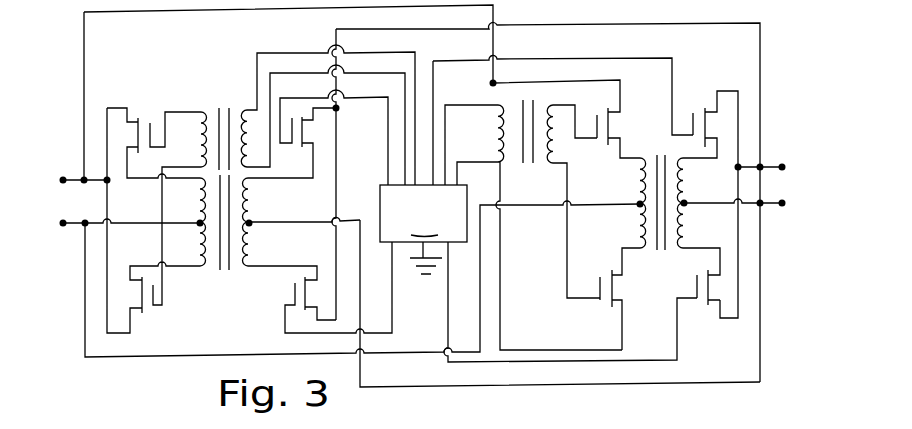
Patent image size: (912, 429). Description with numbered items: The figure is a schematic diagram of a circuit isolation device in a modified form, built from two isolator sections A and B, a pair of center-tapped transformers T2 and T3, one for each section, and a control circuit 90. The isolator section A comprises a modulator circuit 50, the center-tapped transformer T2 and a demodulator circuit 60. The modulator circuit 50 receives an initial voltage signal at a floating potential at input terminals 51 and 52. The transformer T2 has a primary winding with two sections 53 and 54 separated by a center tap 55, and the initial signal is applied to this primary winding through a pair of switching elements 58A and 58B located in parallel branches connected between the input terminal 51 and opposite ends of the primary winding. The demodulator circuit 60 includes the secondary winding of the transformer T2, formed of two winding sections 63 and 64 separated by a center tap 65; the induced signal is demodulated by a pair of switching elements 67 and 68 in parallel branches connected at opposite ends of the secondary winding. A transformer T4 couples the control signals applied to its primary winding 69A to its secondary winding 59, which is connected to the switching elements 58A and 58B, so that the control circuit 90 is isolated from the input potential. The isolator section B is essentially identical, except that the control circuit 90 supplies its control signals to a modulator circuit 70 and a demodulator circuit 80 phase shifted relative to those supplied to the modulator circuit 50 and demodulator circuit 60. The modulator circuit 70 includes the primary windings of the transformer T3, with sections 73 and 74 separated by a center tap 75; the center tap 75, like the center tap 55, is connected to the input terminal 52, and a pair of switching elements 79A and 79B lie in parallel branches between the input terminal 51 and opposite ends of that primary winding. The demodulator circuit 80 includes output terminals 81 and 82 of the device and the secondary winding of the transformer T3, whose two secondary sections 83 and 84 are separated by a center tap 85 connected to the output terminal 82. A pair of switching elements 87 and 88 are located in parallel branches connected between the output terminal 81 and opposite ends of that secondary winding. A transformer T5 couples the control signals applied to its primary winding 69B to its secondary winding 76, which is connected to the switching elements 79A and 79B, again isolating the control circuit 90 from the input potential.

The modulator circuit 50 is at (181, 56).
The input terminal 51 is at (63, 178).
The input terminal 52 is at (63, 226).
The primary winding section 53 is at (200, 198).
The primary winding section 54 is at (200, 243).
The center tap 55 is at (200, 222).
The switching element 58A is at (147, 86).
The switching element 58B is at (151, 315).
The secondary winding 59 is at (203, 134).
The demodulator circuit 60 is at (318, 192).
The secondary winding section 63 is at (249, 192).
The secondary winding section 64 is at (249, 243).
The center tap 65 is at (289, 226).
The switching element 67 is at (320, 129).
The switching element 68 is at (320, 293).
The primary winding 69A is at (250, 137).
The primary winding 69B is at (507, 135).
The modulator circuit 70 is at (581, 389).
The primary winding section 73 is at (641, 188).
The primary winding section 74 is at (641, 225).
The center tap 75 is at (612, 203).
The secondary winding 76 is at (550, 133).
The switching element 79A is at (619, 127).
The switching element 79B is at (605, 307).
The demodulator circuit 80 is at (747, 38).
The output terminal 81 is at (782, 166).
The output terminal 82 is at (784, 201).
The secondary winding section 83 is at (683, 174).
The secondary winding section 84 is at (687, 223).
The center tap 85 is at (686, 204).
The switching element 87 is at (720, 125).
The switching element 88 is at (724, 285).
The control circuit 90 is at (538, 208).
The center-tapped transformer T2 is at (229, 273).
The center-tapped transformer T3 is at (664, 254).
The transformer T4 is at (225, 106).
The transformer T5 is at (531, 98).
The isolator section A is at (123, 372).
The isolator section B is at (712, 396).